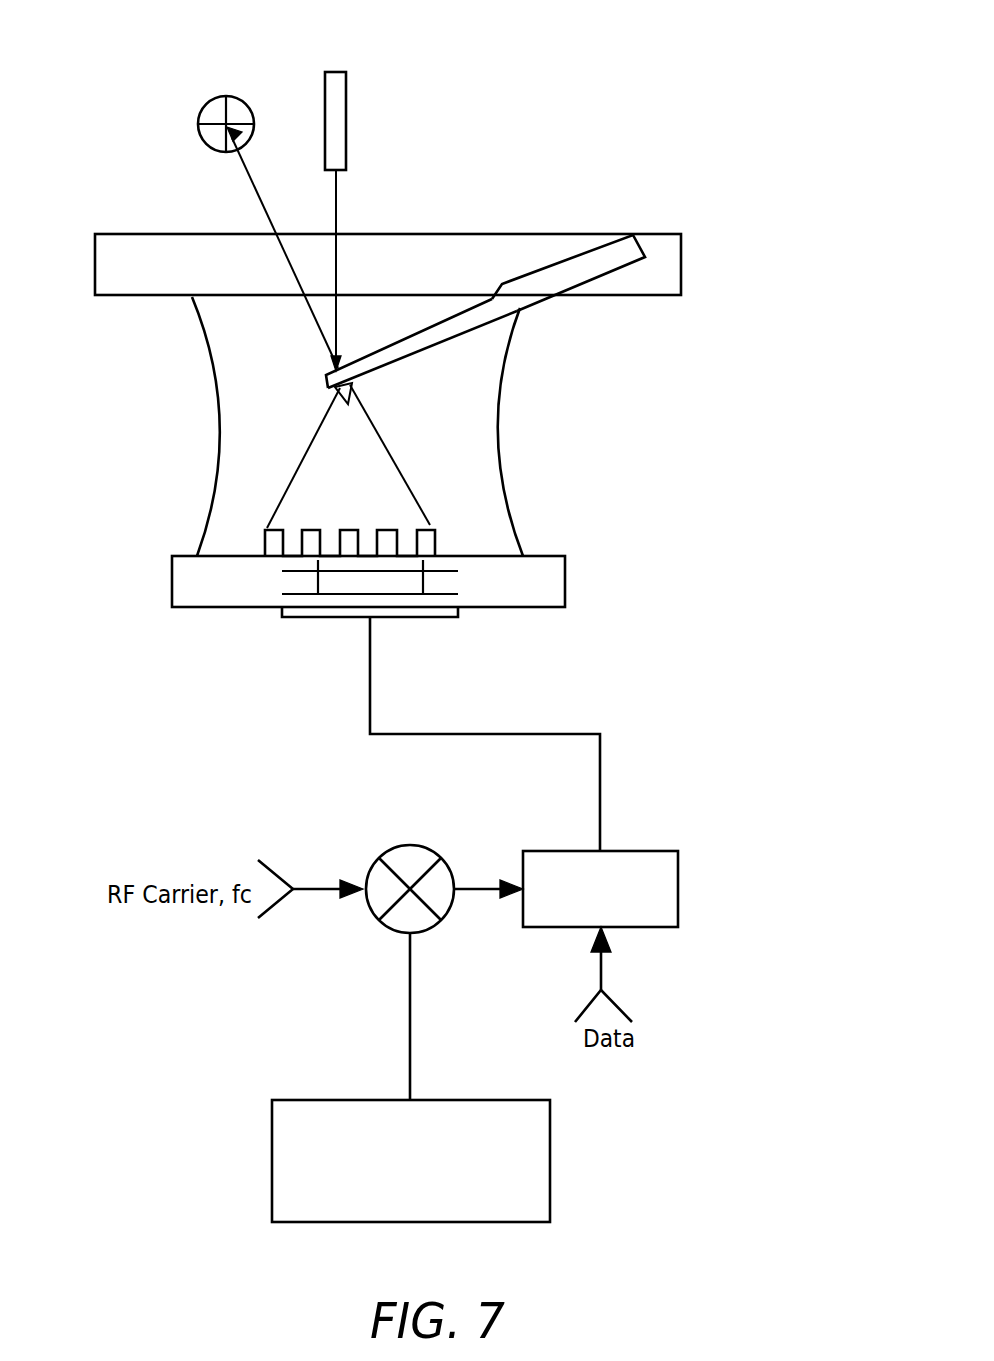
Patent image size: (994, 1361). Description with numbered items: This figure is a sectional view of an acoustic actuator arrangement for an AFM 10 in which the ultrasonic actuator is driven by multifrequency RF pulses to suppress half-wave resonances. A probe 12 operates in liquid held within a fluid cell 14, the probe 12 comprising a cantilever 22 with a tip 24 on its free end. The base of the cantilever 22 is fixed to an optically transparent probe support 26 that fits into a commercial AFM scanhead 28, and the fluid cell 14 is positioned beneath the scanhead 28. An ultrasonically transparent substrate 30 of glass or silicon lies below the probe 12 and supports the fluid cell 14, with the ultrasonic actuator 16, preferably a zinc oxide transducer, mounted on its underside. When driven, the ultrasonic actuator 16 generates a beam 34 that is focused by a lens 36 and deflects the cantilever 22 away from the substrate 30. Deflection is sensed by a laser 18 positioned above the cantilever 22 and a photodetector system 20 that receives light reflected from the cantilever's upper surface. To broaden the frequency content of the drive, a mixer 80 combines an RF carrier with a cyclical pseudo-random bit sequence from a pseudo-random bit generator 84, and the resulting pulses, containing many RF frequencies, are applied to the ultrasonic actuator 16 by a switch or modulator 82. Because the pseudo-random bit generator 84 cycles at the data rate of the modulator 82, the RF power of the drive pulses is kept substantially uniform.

The AFM 10 is at (643, 93).
The probe 12 is at (431, 329).
The cell 14 is at (502, 430).
The ultrasonic actuator 16 is at (387, 610).
The laser 18 is at (336, 72).
The photodetector system 20 is at (225, 97).
The cantilever 22 is at (407, 357).
The tip 24 is at (338, 392).
The probe support 26 is at (612, 253).
The AFM scanhead 28 is at (682, 263).
The ultrasonically transparent substrate 30 is at (567, 578).
The beam 34 is at (390, 448).
The lens 36 is at (437, 537).
The mixer 80 is at (567, 850).
The switch or modulator 82 is at (405, 845).
The pseudo-random bit generator 84 is at (315, 1100).